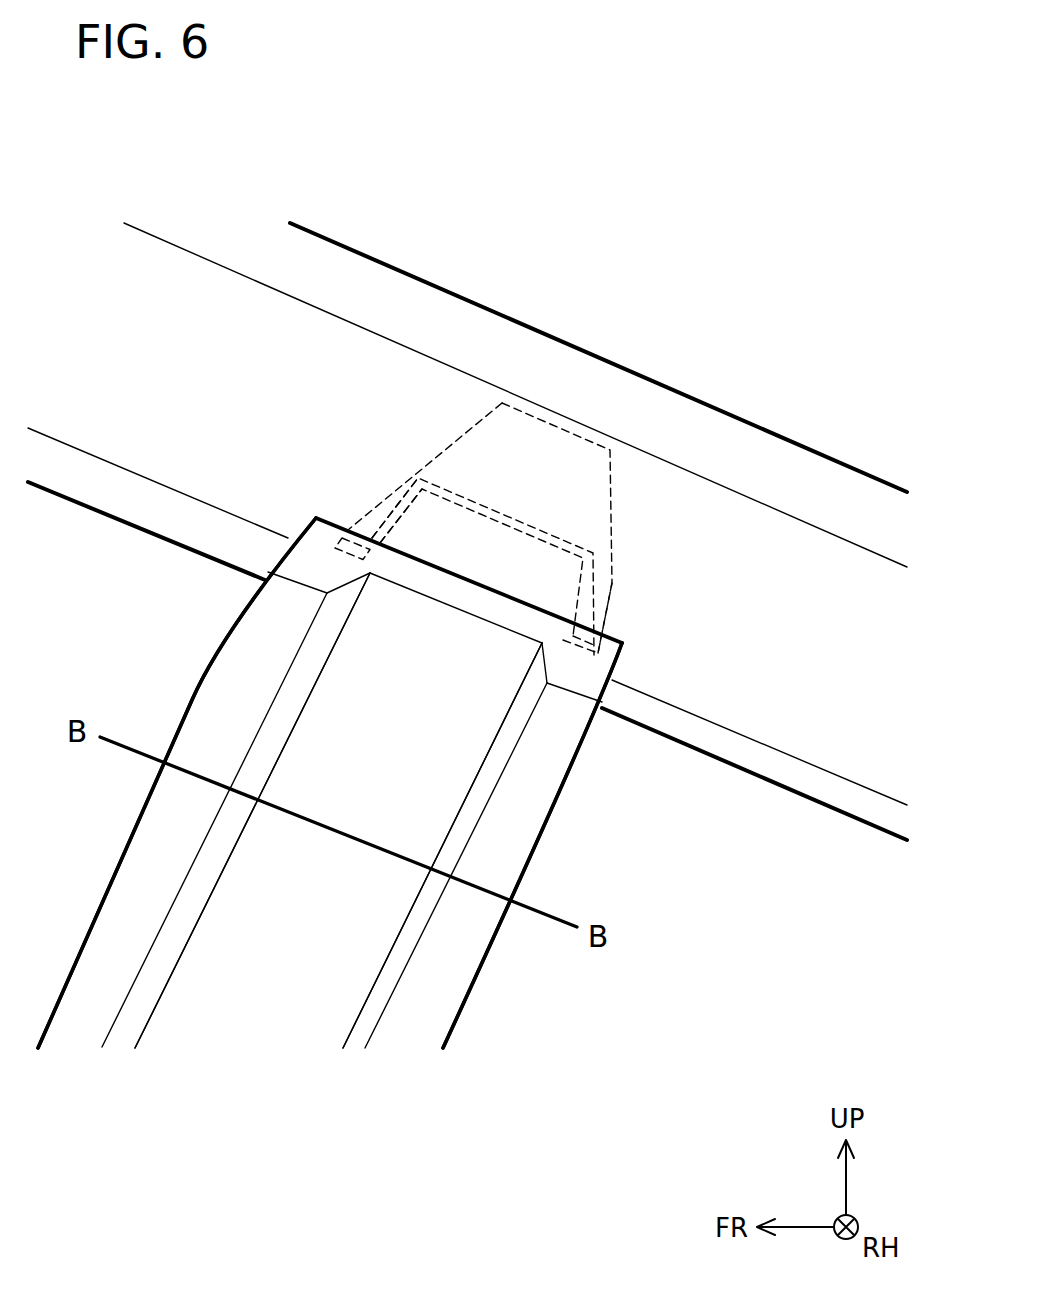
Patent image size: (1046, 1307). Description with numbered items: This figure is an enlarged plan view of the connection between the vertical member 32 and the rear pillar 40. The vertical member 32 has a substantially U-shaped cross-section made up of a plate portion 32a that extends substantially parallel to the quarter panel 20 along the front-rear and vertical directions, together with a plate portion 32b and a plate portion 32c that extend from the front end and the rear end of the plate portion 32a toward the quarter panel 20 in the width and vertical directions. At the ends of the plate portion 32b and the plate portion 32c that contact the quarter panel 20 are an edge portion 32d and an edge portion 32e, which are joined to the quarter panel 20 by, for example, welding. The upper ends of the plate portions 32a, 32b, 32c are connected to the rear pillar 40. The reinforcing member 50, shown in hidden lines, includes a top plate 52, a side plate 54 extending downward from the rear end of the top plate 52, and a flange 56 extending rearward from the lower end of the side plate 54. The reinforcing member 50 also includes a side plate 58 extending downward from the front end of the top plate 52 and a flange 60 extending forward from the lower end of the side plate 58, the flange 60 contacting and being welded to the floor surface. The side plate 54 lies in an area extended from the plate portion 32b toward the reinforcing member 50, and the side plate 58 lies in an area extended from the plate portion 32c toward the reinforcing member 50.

The quarter panel 20 is at (112, 575).
The vertical member 32 is at (480, 972).
The plate portion 32a is at (260, 1010).
The plate portion 32b is at (367, 1018).
The plate portion 32c is at (140, 1002).
The edge portion 32d is at (427, 1010).
The edge portion 32e is at (85, 992).
The rear pillar 40 is at (285, 356).
The reinforcing member 50 is at (584, 418).
The top plate 52 is at (530, 528).
The side plate 54 is at (608, 584).
The flange 56 is at (623, 642).
The side plate 58 is at (390, 520).
The flange 60 is at (347, 537).